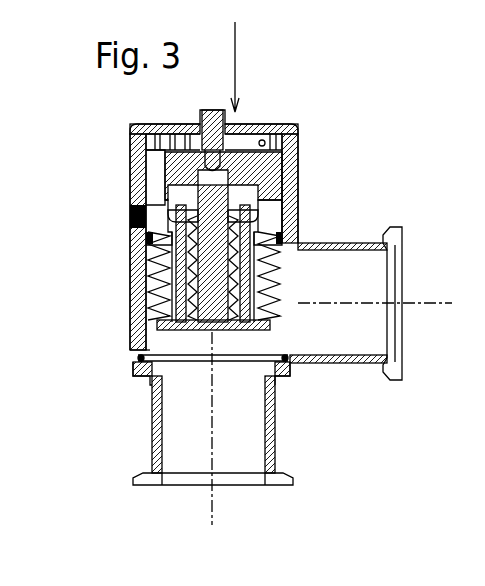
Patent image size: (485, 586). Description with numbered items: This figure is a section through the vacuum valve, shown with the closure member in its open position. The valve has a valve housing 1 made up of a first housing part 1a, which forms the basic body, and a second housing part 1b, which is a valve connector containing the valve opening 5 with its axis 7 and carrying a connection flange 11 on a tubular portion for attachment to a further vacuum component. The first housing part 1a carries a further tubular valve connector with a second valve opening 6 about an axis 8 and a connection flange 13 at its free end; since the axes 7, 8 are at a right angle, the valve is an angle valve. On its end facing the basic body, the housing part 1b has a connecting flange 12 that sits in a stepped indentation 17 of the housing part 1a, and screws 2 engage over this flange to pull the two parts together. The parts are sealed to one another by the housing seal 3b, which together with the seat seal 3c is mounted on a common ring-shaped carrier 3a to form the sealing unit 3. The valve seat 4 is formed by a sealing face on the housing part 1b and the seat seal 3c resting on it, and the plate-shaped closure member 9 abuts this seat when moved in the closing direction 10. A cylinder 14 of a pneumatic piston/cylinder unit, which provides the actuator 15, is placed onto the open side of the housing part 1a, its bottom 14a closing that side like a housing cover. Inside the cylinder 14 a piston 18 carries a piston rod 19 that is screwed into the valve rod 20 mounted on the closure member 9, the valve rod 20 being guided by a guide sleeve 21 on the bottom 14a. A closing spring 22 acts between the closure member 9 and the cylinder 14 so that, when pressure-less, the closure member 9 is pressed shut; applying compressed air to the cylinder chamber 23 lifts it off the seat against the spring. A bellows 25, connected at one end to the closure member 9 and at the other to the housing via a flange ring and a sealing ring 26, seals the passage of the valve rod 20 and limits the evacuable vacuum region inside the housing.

The valve housing 1 is at (118, 386).
The first housing part 1a is at (138, 302).
The second housing part 1b is at (266, 447).
The screw 2 is at (282, 378).
The sealing unit 3 is at (268, 360).
The carrier 3a is at (290, 364).
The housing seal 3b is at (138, 358).
The seat seal 3c is at (140, 354).
The valve seat 4 is at (286, 346).
The valve opening 5 is at (243, 417).
The valve opening 6 is at (326, 276).
The axis 7 is at (283, 483).
The axis 8 is at (420, 304).
The closure member 9 is at (150, 368).
The closing direction 10 is at (238, 64).
The connection flange 11 is at (145, 478).
The connecting flange 12 is at (138, 364).
The connection flange 13 is at (398, 242).
The cylinder 14 is at (297, 178).
The bottom 14a is at (281, 226).
The actuator 15 is at (313, 138).
The indentation 17 is at (286, 357).
The piston 18 is at (230, 172).
The piston rod 19 is at (281, 201).
The valve rod 20 is at (212, 278).
The guide sleeve 21 is at (262, 300).
The closing spring 22 is at (180, 270).
The cylinder chamber 23 is at (158, 190).
The bellows 25 is at (152, 310).
The sealing ring 26 is at (142, 240).